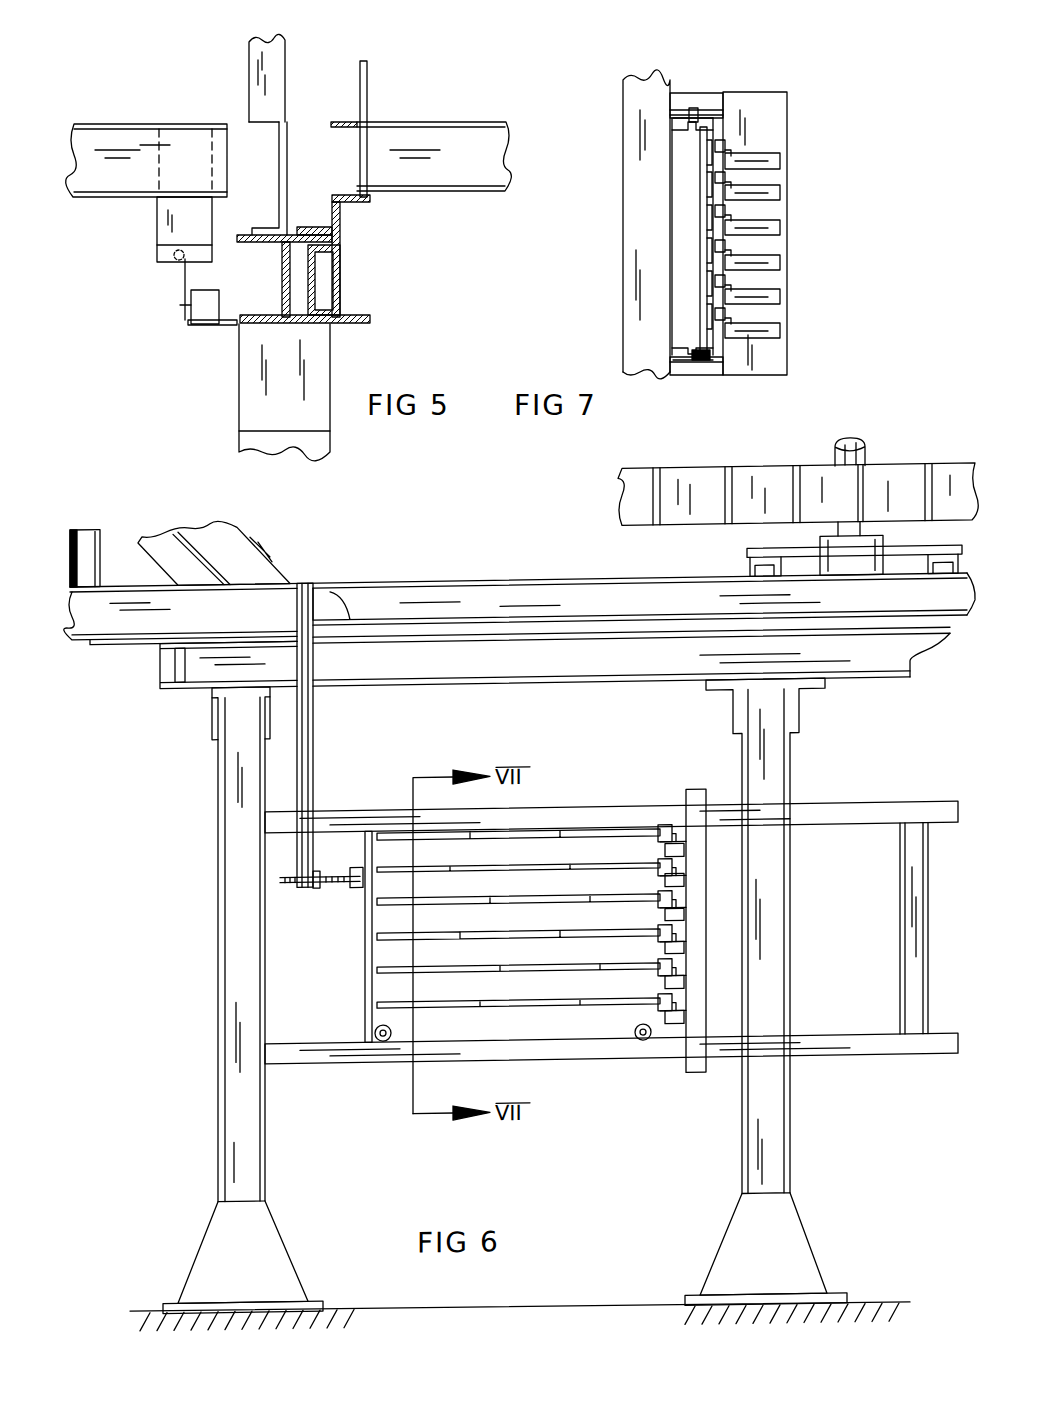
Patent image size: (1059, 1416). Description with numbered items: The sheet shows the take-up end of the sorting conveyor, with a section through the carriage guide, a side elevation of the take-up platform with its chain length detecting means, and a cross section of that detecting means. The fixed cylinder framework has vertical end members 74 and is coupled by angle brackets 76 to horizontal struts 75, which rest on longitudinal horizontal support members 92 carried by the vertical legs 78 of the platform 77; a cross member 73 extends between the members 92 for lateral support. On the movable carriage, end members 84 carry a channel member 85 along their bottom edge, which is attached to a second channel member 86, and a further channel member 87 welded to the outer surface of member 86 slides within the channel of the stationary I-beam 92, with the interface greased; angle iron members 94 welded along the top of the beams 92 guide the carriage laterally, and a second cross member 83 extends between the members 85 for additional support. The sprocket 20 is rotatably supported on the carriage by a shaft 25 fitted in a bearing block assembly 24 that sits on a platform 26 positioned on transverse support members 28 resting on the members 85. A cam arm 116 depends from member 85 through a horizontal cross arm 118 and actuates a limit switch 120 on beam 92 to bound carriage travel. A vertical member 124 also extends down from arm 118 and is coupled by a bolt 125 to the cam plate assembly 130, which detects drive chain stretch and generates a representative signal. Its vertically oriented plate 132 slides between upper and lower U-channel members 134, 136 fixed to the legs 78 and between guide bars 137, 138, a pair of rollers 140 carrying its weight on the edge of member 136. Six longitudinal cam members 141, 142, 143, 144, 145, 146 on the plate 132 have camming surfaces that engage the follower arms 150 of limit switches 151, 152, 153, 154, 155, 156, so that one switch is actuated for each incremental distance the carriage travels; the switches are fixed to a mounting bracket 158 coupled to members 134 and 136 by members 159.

In FIG. 6, the sprocket 20 is at (892, 483).
In FIG. 6, the bearing block assembly 24 is at (820, 557).
In FIG. 6, the shaft 25 is at (862, 545).
In FIG. 6, the platform 26 is at (940, 570).
In FIG. 6, the transverse support members 28 is at (750, 580).
In FIG. 6, the cross member 73 is at (160, 688).
In FIG. 6, the vertical end members 74 is at (104, 549).
In FIG. 5, the horizontal struts 75 is at (279, 170).
In FIG. 6, the horizontal struts 75 is at (105, 647).
In FIG. 5, the angle brackets 76 is at (249, 72).
In FIG. 6, the angle brackets 76 is at (258, 563).
In FIG. 6, the platform 77 is at (215, 775).
In FIG. 5, the vertical legs 78 is at (239, 373).
In FIG. 7, the vertical legs 78 is at (623, 91).
In FIG. 6, the vertical legs 78 is at (218, 888).
In FIG. 5, the second cross member 83 is at (452, 122).
In FIG. 5, the end members 84 is at (367, 72).
In FIG. 5, the channel member 85 is at (340, 122).
In FIG. 6, the channel member 85 is at (450, 587).
In FIG. 5, the second channel member 86 is at (357, 203).
In FIG. 5, the channel member 87 is at (330, 290).
In FIG. 5, the horizontal support members 92 is at (282, 280).
In FIG. 6, the horizontal support members 92 is at (592, 690).
In FIG. 5, the angle iron members 94 is at (301, 228).
In FIG. 6, the angle iron members 94 is at (520, 635).
In FIG. 5, the cam arm 116 is at (157, 223).
In FIG. 5, the horizontal cross arm 118 is at (120, 124).
In FIG. 6, the horizontal cross arm 118 is at (330, 604).
In FIG. 5, the limit switch 120 is at (191, 320).
In FIG. 6, the vertical member 124 is at (313, 754).
In FIG. 6, the bolt 125 is at (338, 889).
In FIG. 6, the cam plate assembly 130 is at (357, 966).
In FIG. 7, the plate 132 is at (700, 176).
In FIG. 7, the U-channel member 134 is at (686, 110).
In FIG. 6, the U-channel member 134 is at (900, 812).
In FIG. 7, the U-channel member 136 is at (689, 375).
In FIG. 6, the U-channel member 136 is at (848, 1067).
In FIG. 7, the guide bar 137 is at (693, 112).
In FIG. 7, the guide bar 138 is at (704, 362).
In FIG. 6, the rollers 140 is at (375, 1036).
In FIG. 6, the cam member 141 is at (482, 851).
In FIG. 6, the cam member 142 is at (482, 883).
In FIG. 6, the cam member 143 is at (482, 916).
In FIG. 6, the cam member 144 is at (482, 950).
In FIG. 6, the cam member 145 is at (482, 984).
In FIG. 6, the cam member 146 is at (484, 1019).
In FIG. 7, the follower arms 150 is at (731, 244).
In FIG. 6, the follower arms 150 is at (660, 853).
In FIG. 7, the limit switch 151 is at (780, 159).
In FIG. 6, the limit switch 151 is at (684, 861).
In FIG. 7, the limit switch 152 is at (780, 192).
In FIG. 6, the limit switch 152 is at (684, 891).
In FIG. 7, the limit switch 153 is at (780, 227).
In FIG. 6, the limit switch 153 is at (684, 925).
In FIG. 7, the limit switch 154 is at (780, 263).
In FIG. 6, the limit switch 154 is at (684, 958).
In FIG. 7, the limit switch 155 is at (780, 297).
In FIG. 6, the limit switch 155 is at (684, 993).
In FIG. 7, the limit switch 156 is at (780, 331).
In FIG. 6, the limit switch 156 is at (684, 1028).
In FIG. 7, the mounting bracket 158 is at (787, 93).
In FIG. 6, the mounting bracket 158 is at (686, 1085).
In FIG. 7, the members 159 is at (710, 93).